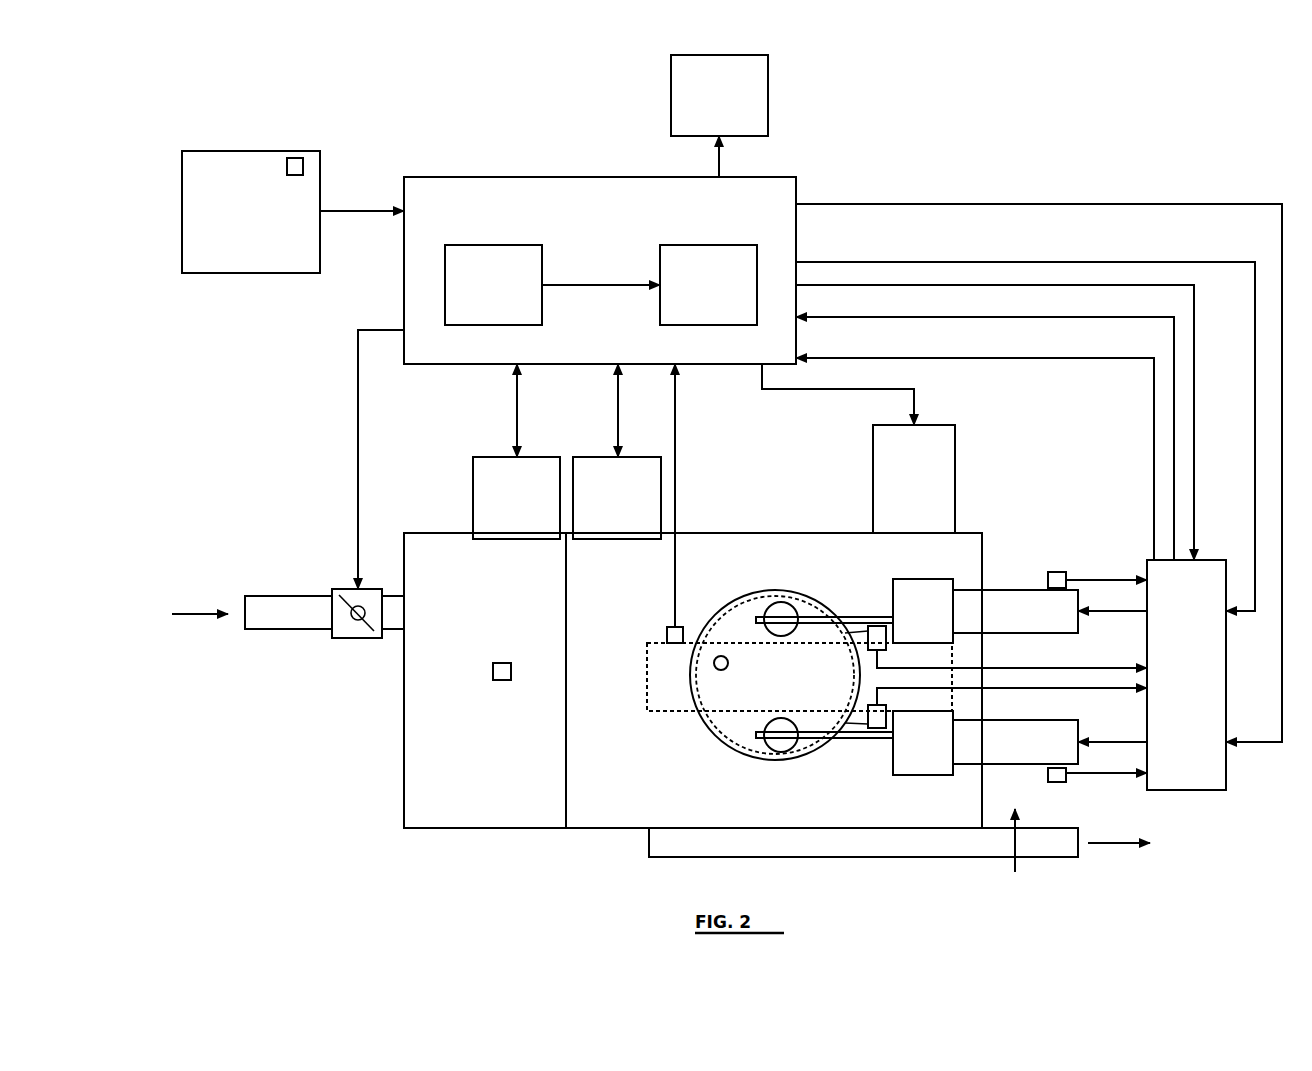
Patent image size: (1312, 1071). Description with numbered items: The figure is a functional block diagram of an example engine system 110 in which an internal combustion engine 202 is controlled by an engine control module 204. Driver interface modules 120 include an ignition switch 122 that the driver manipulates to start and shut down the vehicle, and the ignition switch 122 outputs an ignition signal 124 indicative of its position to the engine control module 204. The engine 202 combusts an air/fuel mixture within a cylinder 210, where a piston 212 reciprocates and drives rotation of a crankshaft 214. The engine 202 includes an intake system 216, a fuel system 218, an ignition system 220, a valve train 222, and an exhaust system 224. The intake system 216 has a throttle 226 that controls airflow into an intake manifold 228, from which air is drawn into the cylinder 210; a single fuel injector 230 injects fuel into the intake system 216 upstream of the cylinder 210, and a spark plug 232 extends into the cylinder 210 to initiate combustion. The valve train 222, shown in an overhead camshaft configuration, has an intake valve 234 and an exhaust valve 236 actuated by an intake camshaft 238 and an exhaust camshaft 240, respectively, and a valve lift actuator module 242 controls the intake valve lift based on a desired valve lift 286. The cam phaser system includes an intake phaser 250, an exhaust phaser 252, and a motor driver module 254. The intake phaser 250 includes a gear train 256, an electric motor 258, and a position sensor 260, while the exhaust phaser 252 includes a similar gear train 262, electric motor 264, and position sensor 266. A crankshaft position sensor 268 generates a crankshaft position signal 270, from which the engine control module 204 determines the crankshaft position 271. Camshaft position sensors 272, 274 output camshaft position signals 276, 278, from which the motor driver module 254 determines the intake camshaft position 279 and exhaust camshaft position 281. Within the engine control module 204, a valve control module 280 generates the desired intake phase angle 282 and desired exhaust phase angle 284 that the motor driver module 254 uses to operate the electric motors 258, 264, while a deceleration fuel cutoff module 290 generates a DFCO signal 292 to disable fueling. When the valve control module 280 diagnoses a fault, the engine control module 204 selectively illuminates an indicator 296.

The engine system 110 is at (149, 86).
The driver interface modules 120 is at (240, 151).
The ignition switch 122 is at (295, 158).
The ignition signal 124 is at (343, 211).
The internal combustion engine 202 is at (440, 864).
The engine control module 204 is at (604, 177).
The cylinder 210 is at (705, 728).
The piston 212 is at (742, 758).
The crankshaft 214 is at (647, 676).
The intake system 216 is at (261, 596).
The fuel system 218 is at (485, 457).
The ignition system 220 is at (585, 457).
The valve train 222 is at (858, 548).
The exhaust system 224 is at (863, 857).
The throttle 226 is at (343, 589).
The intake manifold 228 is at (404, 786).
The fuel injector 230 is at (504, 663).
The spark plug 232 is at (714, 668).
The intake valve 234 is at (782, 603).
The exhaust valve 236 is at (783, 752).
The intake camshaft 238 is at (876, 617).
The exhaust camshaft 240 is at (881, 739).
The valve lift actuator module 242 is at (923, 425).
The intake phaser 250 is at (1020, 518).
The exhaust phaser 252 is at (1015, 864).
The motor driver module 254 is at (1226, 780).
The gear train 256 is at (930, 579).
The electric motor 258 is at (1078, 633).
The position sensor 260 is at (1062, 572).
The gear train 262 is at (920, 775).
The electric motor 264 is at (1076, 720).
The position sensor 266 is at (1064, 782).
The crankshaft position sensor 268 is at (658, 627).
The crankshaft position signal 270 is at (675, 440).
The crankshaft position 271 is at (1194, 395).
The camshaft position sensor 272 is at (849, 634).
The camshaft position sensor 274 is at (847, 722).
The camshaft position signal 276 is at (1005, 668).
The camshaft position signal 278 is at (1005, 688).
The intake camshaft position 279 is at (1144, 360).
The valve control module 280 is at (711, 245).
The exhaust camshaft position 281 is at (1126, 408).
The desired intake phase angle 282 is at (838, 204).
The desired exhaust phase angle 284 is at (838, 262).
The desired valve lift 286 is at (816, 389).
The deceleration fuel cutoff module 290 is at (498, 245).
The DFCO signal 292 is at (587, 285).
The indicator 296 is at (768, 90).